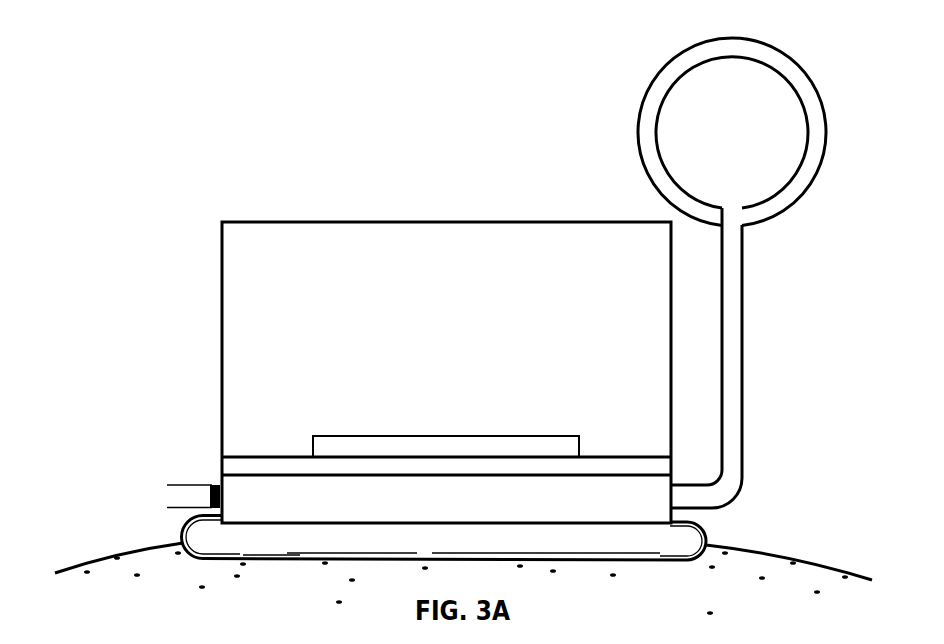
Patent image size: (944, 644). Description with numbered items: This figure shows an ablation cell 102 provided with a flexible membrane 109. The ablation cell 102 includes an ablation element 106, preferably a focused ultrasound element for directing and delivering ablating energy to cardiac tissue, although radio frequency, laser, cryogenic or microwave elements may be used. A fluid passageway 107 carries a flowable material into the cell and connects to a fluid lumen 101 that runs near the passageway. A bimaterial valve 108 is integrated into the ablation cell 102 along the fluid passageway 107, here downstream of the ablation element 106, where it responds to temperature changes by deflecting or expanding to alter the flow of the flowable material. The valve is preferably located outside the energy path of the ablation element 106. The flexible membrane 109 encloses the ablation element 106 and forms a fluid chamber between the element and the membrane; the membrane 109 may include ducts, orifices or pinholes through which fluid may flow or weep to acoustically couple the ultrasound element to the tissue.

The fluid lumen 101 is at (742, 118).
The ablation cell 102 is at (443, 188).
The ablation element 106 is at (342, 443).
The fluid passageway 107 is at (733, 340).
The bimaterial valve 108 is at (210, 495).
The flexible membrane 109 is at (585, 545).